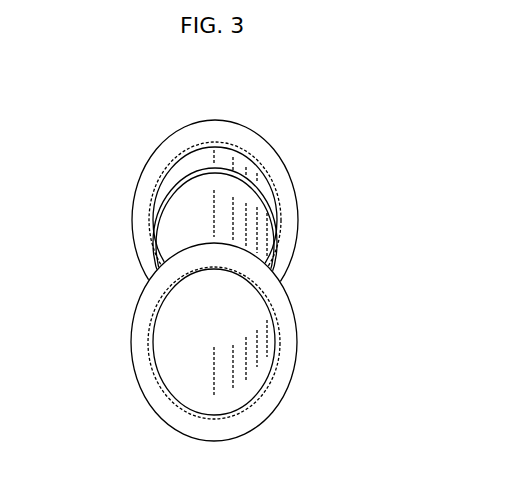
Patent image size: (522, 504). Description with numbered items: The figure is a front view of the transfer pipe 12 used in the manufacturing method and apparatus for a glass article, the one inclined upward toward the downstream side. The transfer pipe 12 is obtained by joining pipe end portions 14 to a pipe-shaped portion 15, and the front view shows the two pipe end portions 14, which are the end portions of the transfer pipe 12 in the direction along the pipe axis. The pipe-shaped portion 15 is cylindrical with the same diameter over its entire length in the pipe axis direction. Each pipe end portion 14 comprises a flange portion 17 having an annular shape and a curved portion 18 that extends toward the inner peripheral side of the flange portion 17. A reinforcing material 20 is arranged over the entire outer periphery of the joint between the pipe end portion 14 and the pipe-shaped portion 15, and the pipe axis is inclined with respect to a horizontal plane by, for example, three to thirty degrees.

The transfer pipe 12 is at (239, 288).
The pipe end portion 14 is at (233, 288).
The pipe-shaped portion 15 is at (173, 240).
The flange portion 17 is at (160, 161).
The curved portion 18 is at (213, 145).
The reinforcing material 20 is at (160, 185).